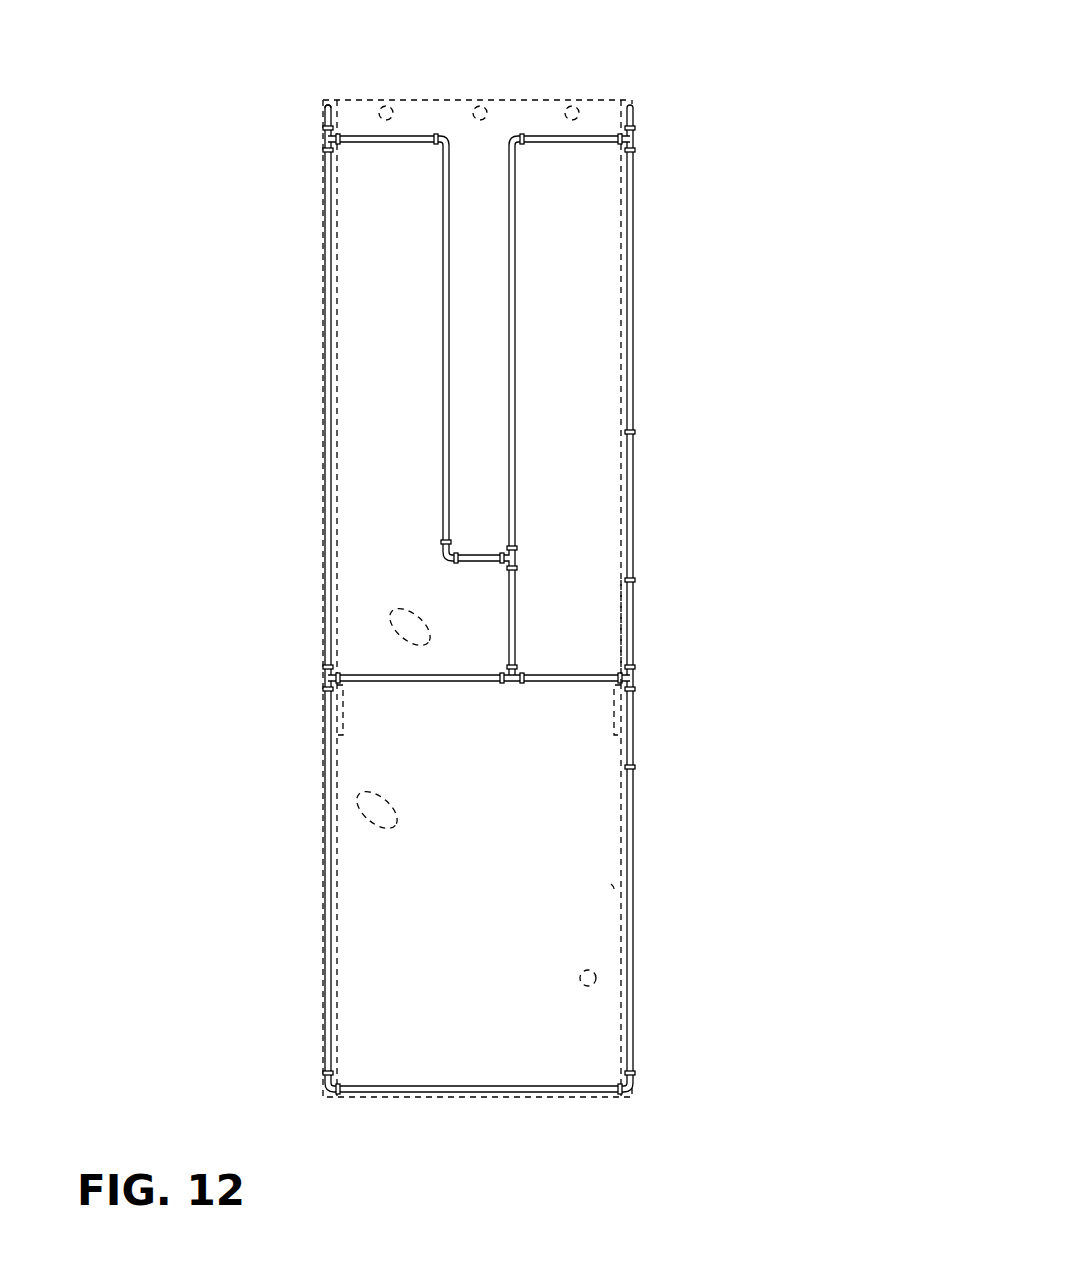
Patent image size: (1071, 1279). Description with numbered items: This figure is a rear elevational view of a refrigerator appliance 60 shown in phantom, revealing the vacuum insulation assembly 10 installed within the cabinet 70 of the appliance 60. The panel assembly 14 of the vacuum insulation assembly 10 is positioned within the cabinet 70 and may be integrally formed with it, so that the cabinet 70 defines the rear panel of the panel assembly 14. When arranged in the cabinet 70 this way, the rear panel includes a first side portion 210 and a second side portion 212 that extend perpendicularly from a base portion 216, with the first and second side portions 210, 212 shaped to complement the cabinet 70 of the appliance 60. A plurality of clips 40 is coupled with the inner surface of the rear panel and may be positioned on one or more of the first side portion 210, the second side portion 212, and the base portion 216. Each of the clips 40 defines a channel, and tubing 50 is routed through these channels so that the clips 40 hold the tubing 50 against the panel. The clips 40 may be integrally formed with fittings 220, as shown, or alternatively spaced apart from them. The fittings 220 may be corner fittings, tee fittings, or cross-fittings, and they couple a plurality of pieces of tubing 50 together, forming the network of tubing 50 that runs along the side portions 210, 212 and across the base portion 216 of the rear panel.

The vacuum insulation assembly 10 is at (640, 77).
The panel assembly 14 is at (646, 333).
The plurality of clips 40 is at (630, 580).
The tubing 50 is at (633, 432).
The refrigerator appliance 60 is at (172, 132).
The cabinet 70 is at (328, 103).
The first side portion 210 is at (323, 415).
The second side portion 212 is at (643, 635).
The base portion 216 is at (437, 885).
The fittings 220 is at (512, 137).